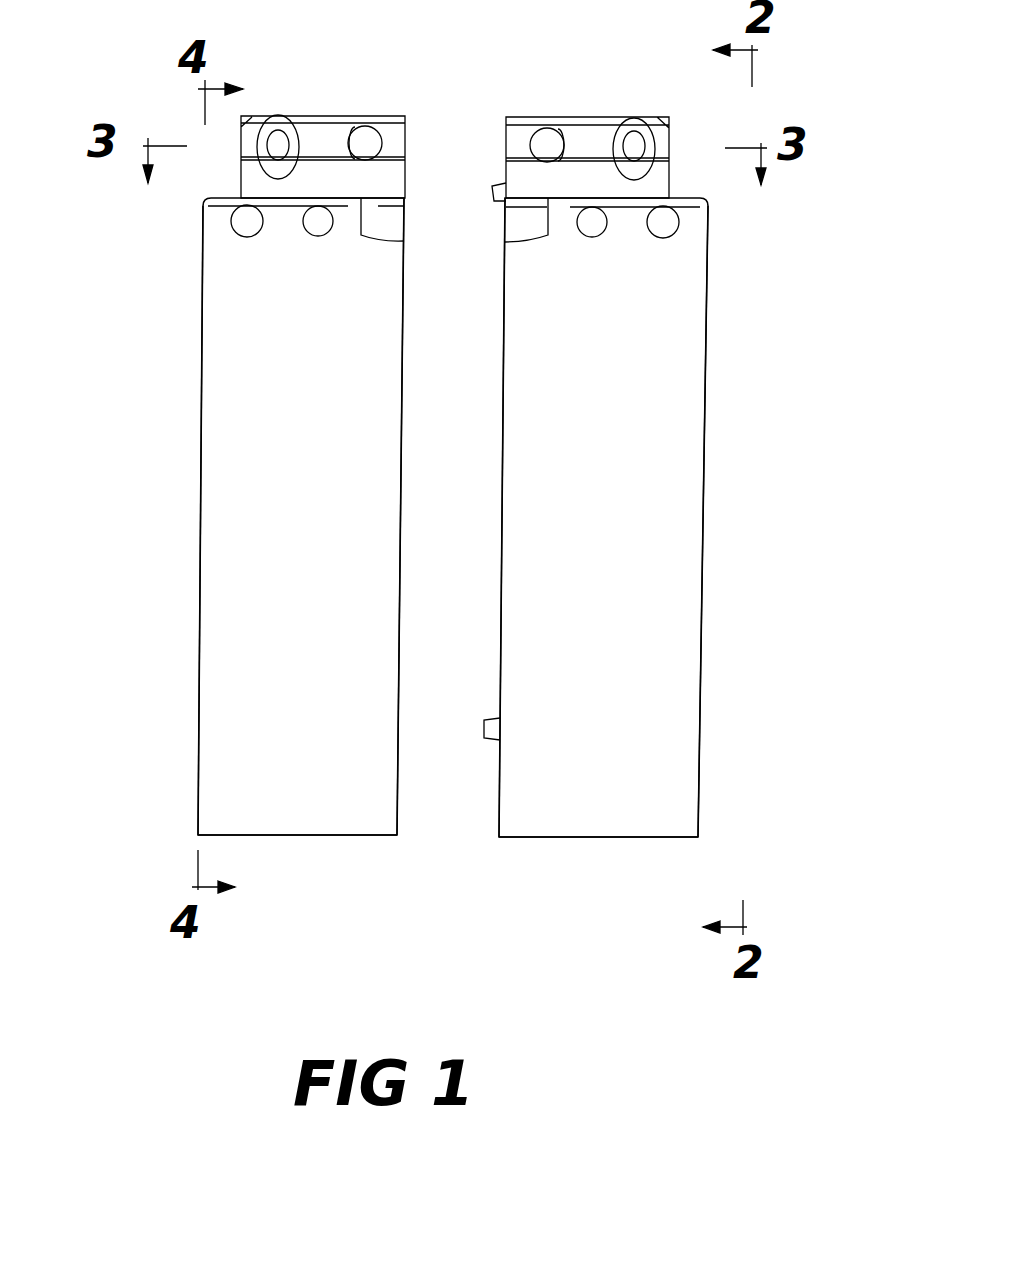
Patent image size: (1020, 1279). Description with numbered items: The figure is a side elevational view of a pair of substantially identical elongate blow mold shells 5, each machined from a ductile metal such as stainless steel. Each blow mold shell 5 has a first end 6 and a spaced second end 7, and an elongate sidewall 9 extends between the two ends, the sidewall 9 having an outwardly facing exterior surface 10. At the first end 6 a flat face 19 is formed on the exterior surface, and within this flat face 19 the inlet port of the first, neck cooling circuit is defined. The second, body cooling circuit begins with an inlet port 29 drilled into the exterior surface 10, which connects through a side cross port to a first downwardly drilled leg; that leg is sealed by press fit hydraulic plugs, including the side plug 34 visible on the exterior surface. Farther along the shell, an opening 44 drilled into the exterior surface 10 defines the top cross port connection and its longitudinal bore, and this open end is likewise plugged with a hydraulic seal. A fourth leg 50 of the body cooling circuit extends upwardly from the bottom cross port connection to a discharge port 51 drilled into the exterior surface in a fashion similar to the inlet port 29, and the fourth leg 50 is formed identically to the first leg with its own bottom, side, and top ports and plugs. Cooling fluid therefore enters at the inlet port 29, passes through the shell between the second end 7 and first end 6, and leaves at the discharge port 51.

The blow mold shell 5 is at (401, 497).
The first end 6 is at (215, 226).
The second end 7 is at (230, 812).
The sidewall 9 is at (200, 556).
The exterior surface 10 is at (305, 630).
The flat face 19 is at (241, 178).
The inlet port 29 is at (634, 135).
The side plug 34 is at (595, 227).
The opening 44 is at (240, 237).
The fourth leg 50 is at (327, 237).
The discharge port 51 is at (278, 137).